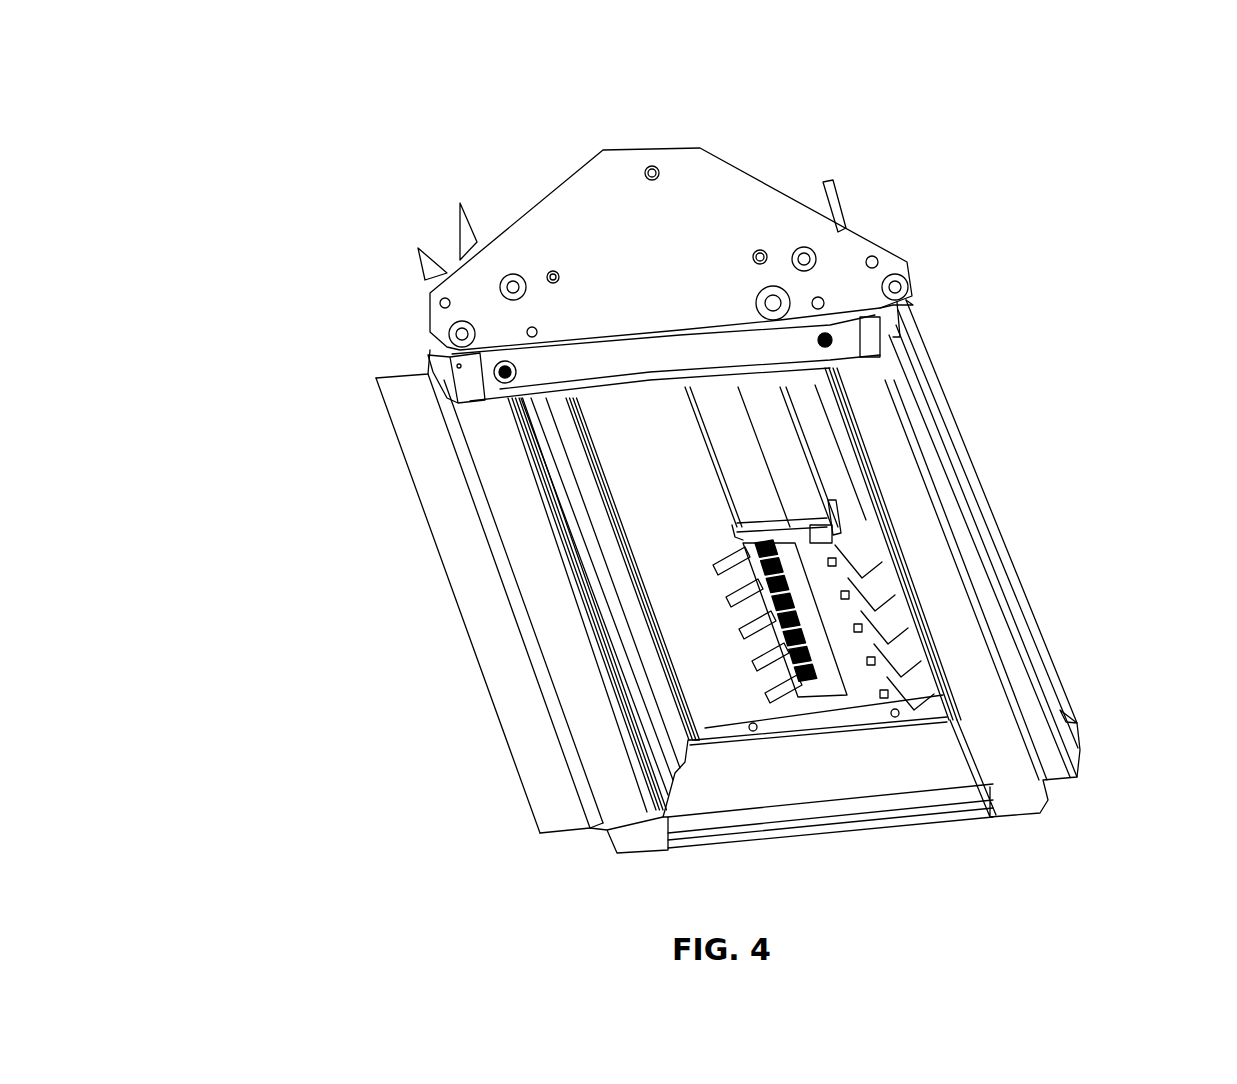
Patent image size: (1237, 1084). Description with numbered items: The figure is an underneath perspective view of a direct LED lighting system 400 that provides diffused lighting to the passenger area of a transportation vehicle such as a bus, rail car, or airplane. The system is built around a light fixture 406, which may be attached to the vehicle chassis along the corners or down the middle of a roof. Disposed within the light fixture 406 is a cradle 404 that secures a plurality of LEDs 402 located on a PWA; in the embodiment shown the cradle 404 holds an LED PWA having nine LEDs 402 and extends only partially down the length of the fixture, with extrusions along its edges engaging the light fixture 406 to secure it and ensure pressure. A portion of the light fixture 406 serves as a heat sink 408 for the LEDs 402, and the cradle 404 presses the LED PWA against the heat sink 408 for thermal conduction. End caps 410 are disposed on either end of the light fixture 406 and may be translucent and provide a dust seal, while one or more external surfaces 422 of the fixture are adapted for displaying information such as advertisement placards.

The direct LED lighting system 400 is at (963, 144).
The LEDs 402 is at (807, 630).
The cradle 404 is at (830, 580).
The light fixture 406 is at (590, 715).
The heat sink 408 is at (789, 469).
The end caps 410 is at (610, 270).
The external surfaces 422 is at (435, 477).